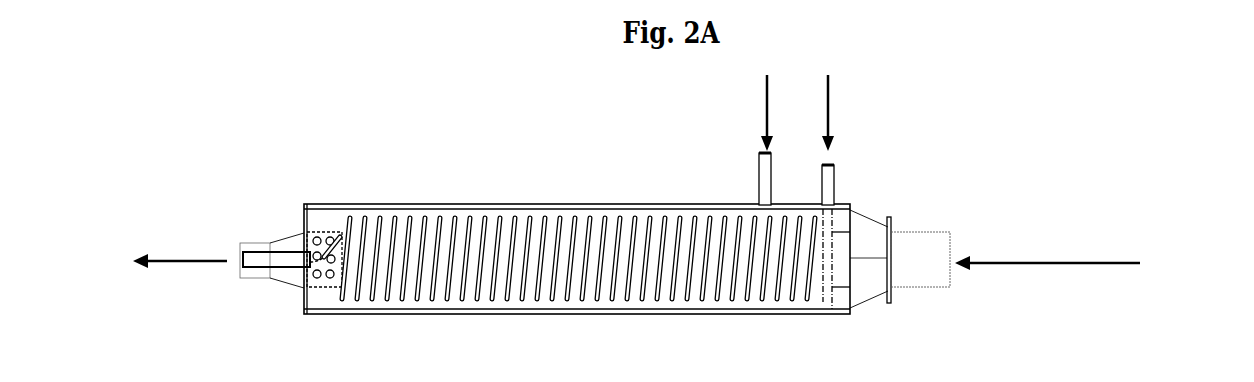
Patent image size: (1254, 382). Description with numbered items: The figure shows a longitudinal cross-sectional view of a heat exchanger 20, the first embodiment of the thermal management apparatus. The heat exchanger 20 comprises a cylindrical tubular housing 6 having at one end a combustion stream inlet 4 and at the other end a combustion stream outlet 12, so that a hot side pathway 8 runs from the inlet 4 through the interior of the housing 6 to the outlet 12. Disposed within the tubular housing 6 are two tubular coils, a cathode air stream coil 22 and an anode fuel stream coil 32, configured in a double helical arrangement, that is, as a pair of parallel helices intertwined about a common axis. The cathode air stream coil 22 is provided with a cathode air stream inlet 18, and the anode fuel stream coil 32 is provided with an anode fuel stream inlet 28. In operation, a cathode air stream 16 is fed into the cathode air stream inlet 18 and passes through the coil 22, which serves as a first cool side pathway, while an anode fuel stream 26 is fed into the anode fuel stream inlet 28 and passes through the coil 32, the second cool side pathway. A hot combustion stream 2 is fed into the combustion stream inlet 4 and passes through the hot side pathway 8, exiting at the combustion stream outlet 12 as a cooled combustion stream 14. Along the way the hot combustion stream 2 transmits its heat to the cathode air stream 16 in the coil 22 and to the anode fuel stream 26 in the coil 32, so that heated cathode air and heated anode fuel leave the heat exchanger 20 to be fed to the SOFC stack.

The hot combustion stream 2 is at (1034, 270).
The combustion stream inlet 4 is at (955, 244).
The tubular housing 6 is at (452, 316).
The hot side pathway 8 is at (316, 218).
The combustion stream outlet 12 is at (230, 248).
The cooled combustion stream 14 is at (168, 269).
The cathode air stream 16 is at (834, 108).
The cathode air stream inlet 18 is at (838, 197).
The heat exchanger 20 is at (1117, 168).
The cathode air stream coil 22 is at (808, 293).
The anode fuel stream 26 is at (757, 115).
The anode fuel stream inlet 28 is at (756, 183).
The anode fuel stream coil 32 is at (697, 285).